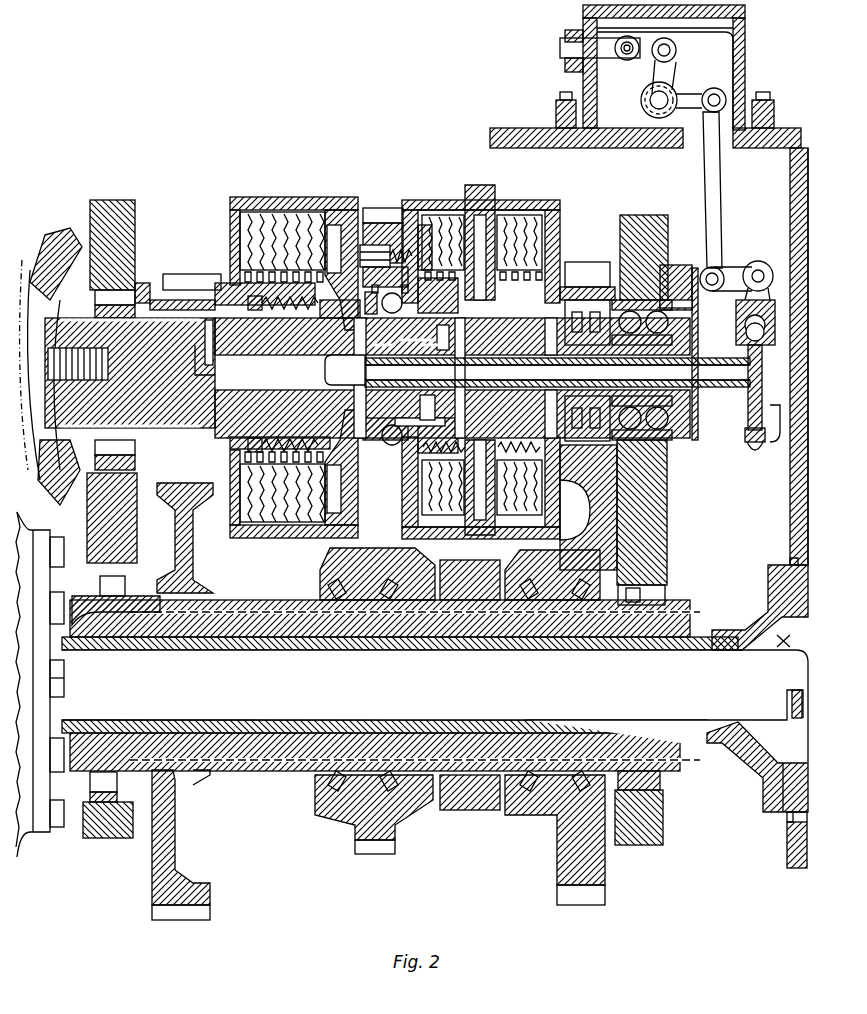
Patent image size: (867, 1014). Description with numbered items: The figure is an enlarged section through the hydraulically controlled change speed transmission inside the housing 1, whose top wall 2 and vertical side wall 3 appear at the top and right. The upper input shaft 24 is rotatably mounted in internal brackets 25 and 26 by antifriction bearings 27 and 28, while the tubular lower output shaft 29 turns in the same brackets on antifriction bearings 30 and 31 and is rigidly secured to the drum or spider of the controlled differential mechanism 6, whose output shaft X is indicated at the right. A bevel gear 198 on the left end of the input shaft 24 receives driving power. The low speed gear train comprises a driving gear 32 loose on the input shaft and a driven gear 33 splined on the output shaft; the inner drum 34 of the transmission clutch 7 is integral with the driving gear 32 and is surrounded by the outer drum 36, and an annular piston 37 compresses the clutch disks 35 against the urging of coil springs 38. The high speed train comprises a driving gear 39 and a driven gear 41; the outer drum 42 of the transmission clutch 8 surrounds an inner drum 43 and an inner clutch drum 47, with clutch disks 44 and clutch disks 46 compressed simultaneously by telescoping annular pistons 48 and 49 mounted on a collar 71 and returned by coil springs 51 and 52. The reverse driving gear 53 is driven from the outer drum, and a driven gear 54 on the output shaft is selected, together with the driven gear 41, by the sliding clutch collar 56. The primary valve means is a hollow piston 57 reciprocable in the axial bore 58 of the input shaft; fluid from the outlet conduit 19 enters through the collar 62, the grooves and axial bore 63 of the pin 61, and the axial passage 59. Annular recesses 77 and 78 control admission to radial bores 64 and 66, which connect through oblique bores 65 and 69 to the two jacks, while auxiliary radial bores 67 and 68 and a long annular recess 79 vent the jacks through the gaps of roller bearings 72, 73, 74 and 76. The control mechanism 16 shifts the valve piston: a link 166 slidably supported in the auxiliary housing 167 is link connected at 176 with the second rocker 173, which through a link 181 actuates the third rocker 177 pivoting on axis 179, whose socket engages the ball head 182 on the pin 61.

The housing 1 is at (790, 165).
The top wall 2 is at (507, 128).
The side wall 3 is at (790, 198).
The controlled differential mechanism 6 is at (30, 530).
The transmission clutch 7 is at (246, 197).
The transmission clutch 8 is at (481, 354).
The control mechanism 16 is at (745, 48).
The outlet conduit 19 is at (778, 442).
The input shaft 24 is at (130, 373).
The internal bracket 25 is at (645, 215).
The internal bracket 26 is at (118, 200).
The antifriction bearing 27 is at (650, 448).
The antifriction bearing 28 is at (143, 283).
The output shaft 29 is at (284, 640).
The antifriction bearing 30 is at (668, 592).
The antifriction bearing 31 is at (100, 582).
The driving gear 32 is at (183, 274).
The driven gear 33 is at (210, 896).
The inner drum 34 is at (228, 283).
The clutch disks 35 is at (352, 205).
The outer drum 36 is at (304, 200).
The annular piston 37 is at (318, 533).
The coil springs 38 is at (290, 312).
The driving gear 39 is at (376, 208).
The driven gear 41 is at (368, 854).
The outer drum 42 is at (442, 200).
The inner drum 43 is at (420, 332).
The clutch disks 44 is at (412, 210).
The clutch disks 46 is at (558, 230).
The inner clutch drum 47 is at (545, 338).
The annular piston 48 is at (468, 200).
The annular piston 49 is at (516, 212).
The coil springs 51 is at (420, 411).
The coil springs 52 is at (545, 410).
The driving gear 53 is at (597, 265).
The driven gear 54 is at (588, 886).
The clutch collar 56 is at (455, 810).
The hollow piston 57 is at (740, 388).
The axial bore 58 is at (335, 385).
The axial internal passage 59 is at (666, 335).
The pin 61 is at (747, 445).
The collar 62 is at (745, 432).
The axial bore 63 is at (748, 340).
The radial bore 64 is at (369, 328).
The oblique bores 65 is at (340, 321).
The radial bore 66 is at (466, 335).
The auxiliary radial bore 67 is at (195, 357).
The auxiliary radial bore 68 is at (585, 392).
The oblique bores 69 is at (441, 406).
The collar 71 is at (454, 336).
The roller bearing 72 is at (170, 322).
The roller bearing 73 is at (213, 330).
The roller bearing 74 is at (572, 392).
The roller bearing 76 is at (604, 338).
The annular recess 77 is at (386, 347).
The annular recess 78 is at (433, 347).
The long annular recess 79 is at (570, 340).
The link 166 is at (560, 47).
The auxiliary housing 167 is at (745, 82).
The second rocker 173 is at (672, 78).
The link connection 176 is at (640, 60).
The third rocker 177 is at (713, 291).
The pivot axis 179 is at (763, 262).
The link 181 is at (717, 206).
The ball head 182 is at (736, 324).
The bevel gear 198 is at (58, 240).
The differential output shaft X is at (777, 650).